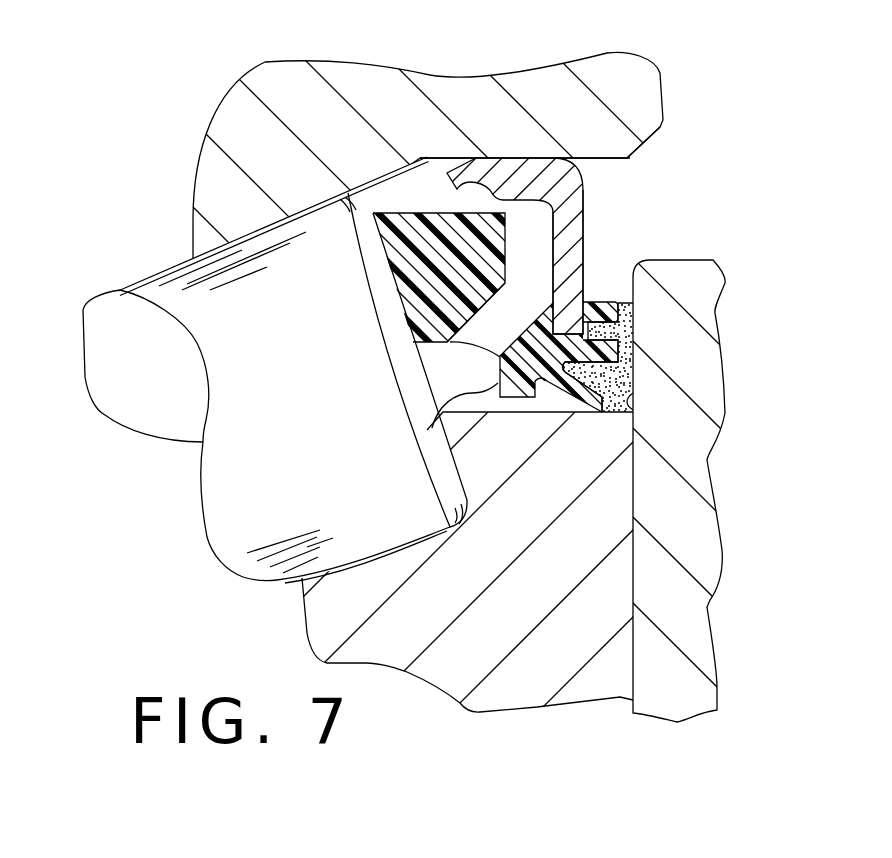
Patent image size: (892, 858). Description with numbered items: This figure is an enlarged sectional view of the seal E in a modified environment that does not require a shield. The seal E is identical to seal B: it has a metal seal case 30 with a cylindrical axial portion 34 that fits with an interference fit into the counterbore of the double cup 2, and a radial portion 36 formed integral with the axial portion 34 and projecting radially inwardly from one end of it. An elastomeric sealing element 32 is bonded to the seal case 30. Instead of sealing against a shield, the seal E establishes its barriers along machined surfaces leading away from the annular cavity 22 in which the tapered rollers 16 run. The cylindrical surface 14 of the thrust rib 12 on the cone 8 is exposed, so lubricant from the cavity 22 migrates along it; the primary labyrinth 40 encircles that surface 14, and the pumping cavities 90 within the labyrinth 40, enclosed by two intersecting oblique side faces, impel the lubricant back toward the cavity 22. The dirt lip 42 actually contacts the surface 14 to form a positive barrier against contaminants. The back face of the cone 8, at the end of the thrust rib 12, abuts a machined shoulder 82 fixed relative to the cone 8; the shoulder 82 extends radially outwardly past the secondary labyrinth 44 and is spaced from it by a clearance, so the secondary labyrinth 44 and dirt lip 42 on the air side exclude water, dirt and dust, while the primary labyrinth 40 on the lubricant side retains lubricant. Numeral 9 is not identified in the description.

The double cup 2 is at (305, 117).
The annular cavity 22 is at (413, 187).
The tapered rollers 16 is at (230, 405).
The thrust rib 12 is at (477, 473).
The cylindrical surface 14 is at (422, 450).
The seal case 30 is at (525, 159).
The axial portion 34 is at (507, 173).
The radial portion 36 is at (578, 208).
The seal E is at (582, 163).
The elastomeric sealing element 32 is at (510, 326).
The pumping cavities 90 is at (435, 322).
The dirt lip 42 is at (577, 397).
The primary labyrinth 40 is at (513, 383).
The secondary labyrinth 44 is at (597, 290).
The elastomer 9 is at (605, 377).
The shoulder 82 is at (607, 423).
The cone 8 is at (305, 637).